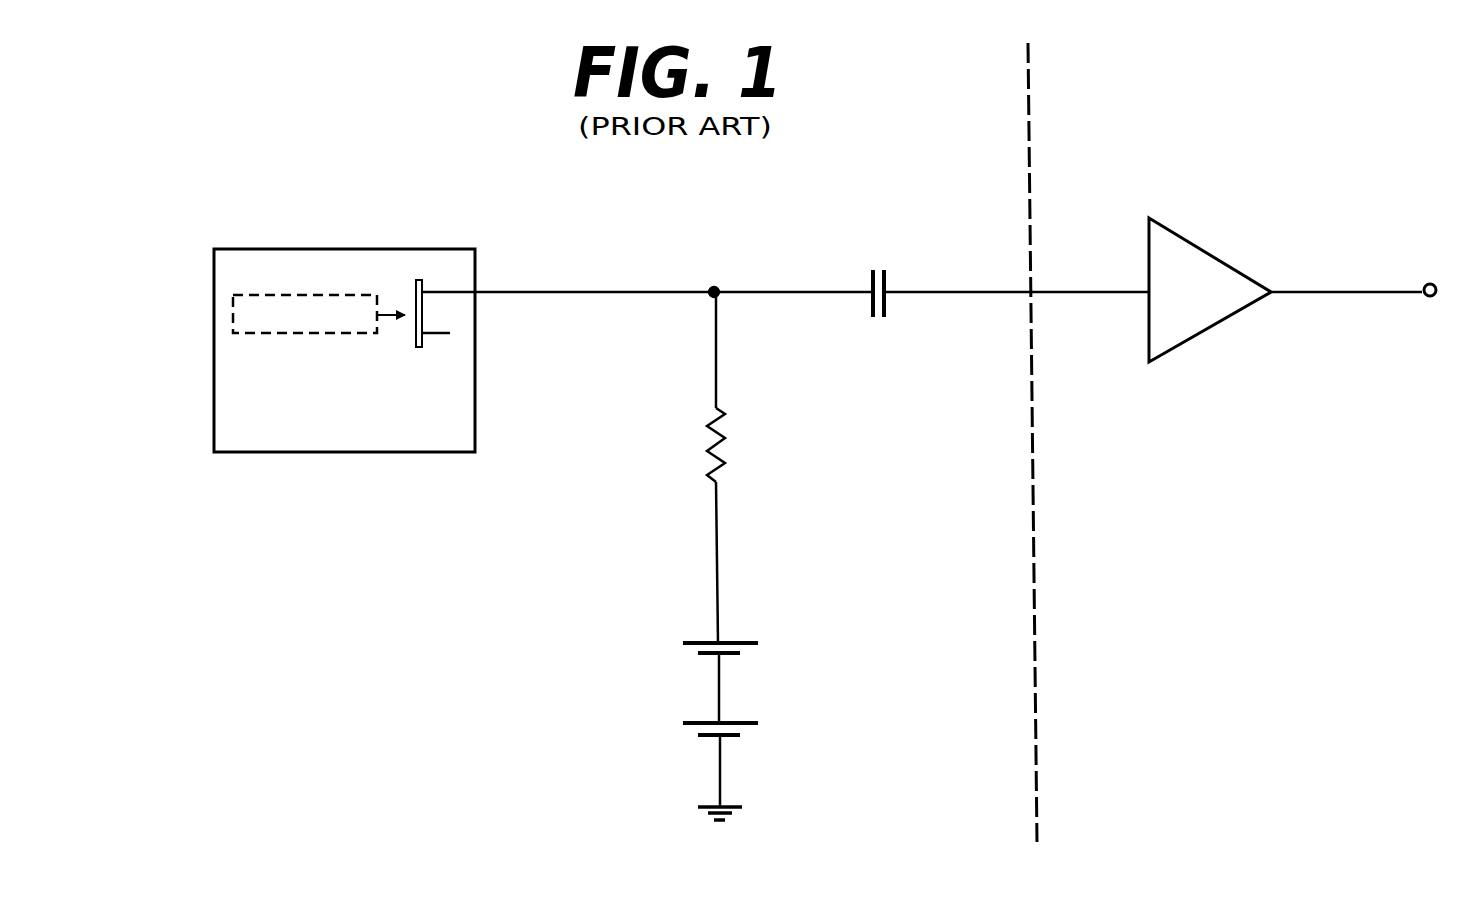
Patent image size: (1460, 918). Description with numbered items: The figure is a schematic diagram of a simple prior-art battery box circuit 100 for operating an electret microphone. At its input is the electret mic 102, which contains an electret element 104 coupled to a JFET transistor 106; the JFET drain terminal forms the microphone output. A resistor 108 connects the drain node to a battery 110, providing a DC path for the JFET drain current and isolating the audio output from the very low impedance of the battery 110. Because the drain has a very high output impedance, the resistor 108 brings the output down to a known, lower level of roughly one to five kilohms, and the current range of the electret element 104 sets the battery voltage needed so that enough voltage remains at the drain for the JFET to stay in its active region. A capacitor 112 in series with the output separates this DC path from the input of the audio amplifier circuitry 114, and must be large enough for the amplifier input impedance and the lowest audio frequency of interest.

The battery box circuit 100 is at (436, 126).
The electret mic 102 is at (214, 318).
The electret element 104 is at (320, 333).
The JFET transistor 106 is at (417, 350).
The resistor 108 is at (707, 442).
The battery 110 is at (682, 688).
The capacitor 112 is at (872, 304).
The audio amplifier circuitry 114 is at (1232, 268).